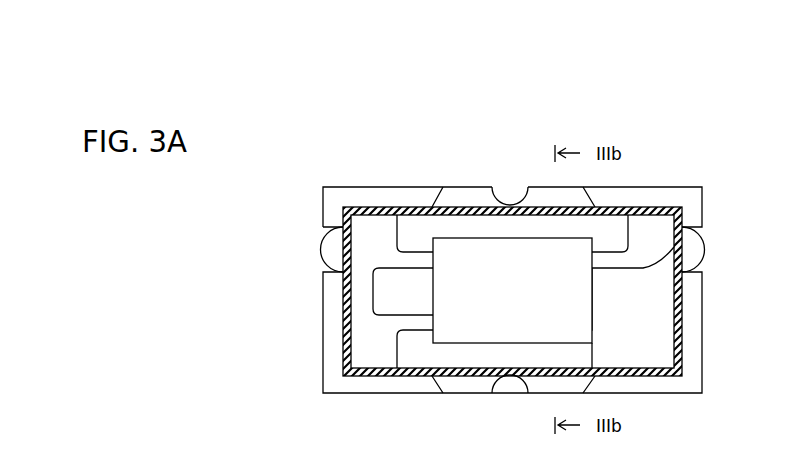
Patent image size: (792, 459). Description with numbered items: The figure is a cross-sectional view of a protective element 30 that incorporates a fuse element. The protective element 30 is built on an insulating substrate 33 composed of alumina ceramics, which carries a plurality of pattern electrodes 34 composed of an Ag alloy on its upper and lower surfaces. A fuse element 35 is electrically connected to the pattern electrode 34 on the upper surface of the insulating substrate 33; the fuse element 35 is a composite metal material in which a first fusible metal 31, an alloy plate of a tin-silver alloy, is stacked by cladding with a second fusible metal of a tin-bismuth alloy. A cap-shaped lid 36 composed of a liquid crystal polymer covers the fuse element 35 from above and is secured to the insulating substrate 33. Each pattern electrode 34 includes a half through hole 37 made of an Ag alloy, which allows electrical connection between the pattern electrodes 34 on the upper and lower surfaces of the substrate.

The protective element 30 is at (632, 182).
The first fusible metal 31 is at (461, 316).
The insulating substrate 33 is at (336, 381).
The pattern electrode 34 is at (451, 214).
The fuse element 35 is at (524, 294).
The cap-shaped lid 36 is at (377, 206).
The half through hole 37 is at (502, 205).